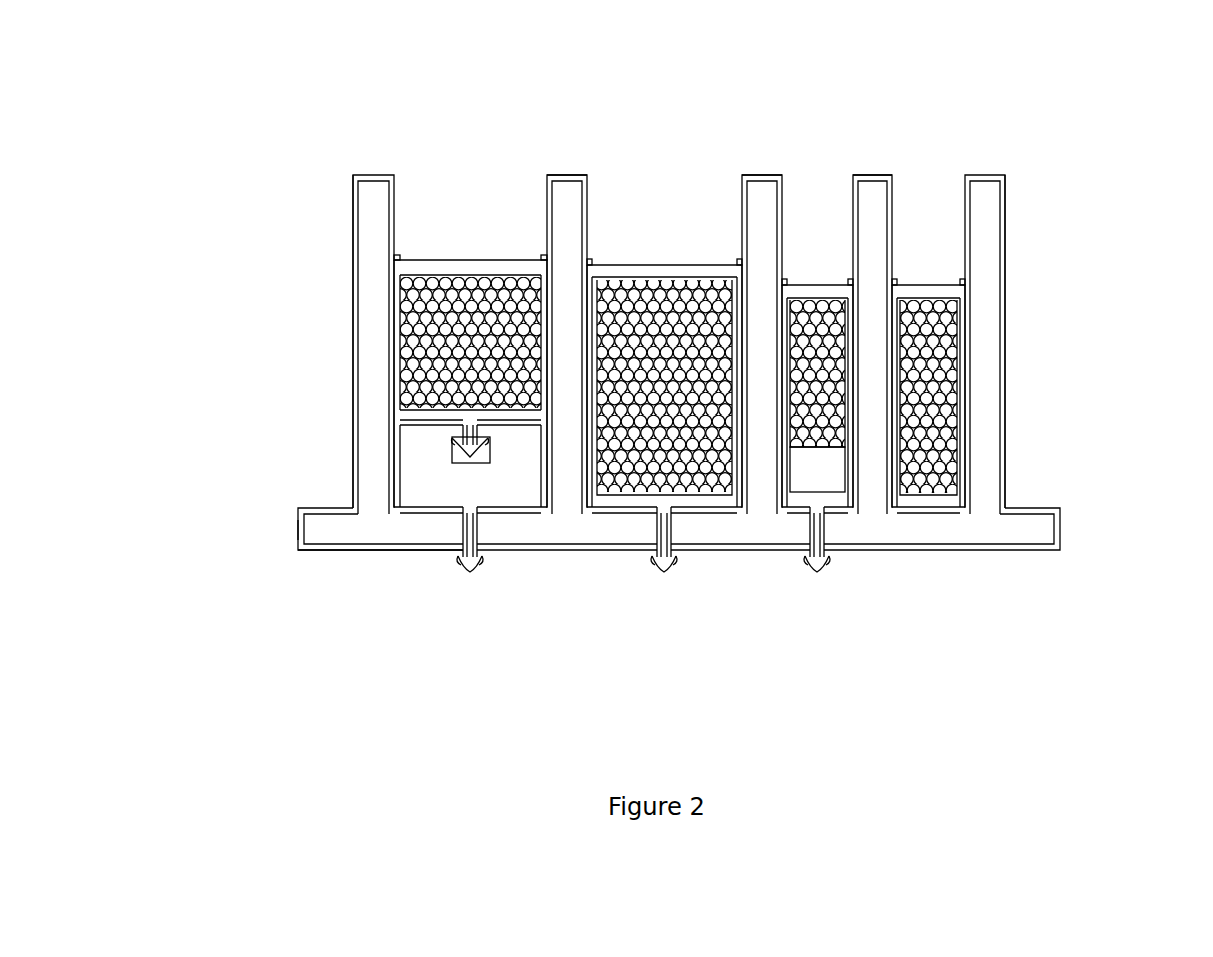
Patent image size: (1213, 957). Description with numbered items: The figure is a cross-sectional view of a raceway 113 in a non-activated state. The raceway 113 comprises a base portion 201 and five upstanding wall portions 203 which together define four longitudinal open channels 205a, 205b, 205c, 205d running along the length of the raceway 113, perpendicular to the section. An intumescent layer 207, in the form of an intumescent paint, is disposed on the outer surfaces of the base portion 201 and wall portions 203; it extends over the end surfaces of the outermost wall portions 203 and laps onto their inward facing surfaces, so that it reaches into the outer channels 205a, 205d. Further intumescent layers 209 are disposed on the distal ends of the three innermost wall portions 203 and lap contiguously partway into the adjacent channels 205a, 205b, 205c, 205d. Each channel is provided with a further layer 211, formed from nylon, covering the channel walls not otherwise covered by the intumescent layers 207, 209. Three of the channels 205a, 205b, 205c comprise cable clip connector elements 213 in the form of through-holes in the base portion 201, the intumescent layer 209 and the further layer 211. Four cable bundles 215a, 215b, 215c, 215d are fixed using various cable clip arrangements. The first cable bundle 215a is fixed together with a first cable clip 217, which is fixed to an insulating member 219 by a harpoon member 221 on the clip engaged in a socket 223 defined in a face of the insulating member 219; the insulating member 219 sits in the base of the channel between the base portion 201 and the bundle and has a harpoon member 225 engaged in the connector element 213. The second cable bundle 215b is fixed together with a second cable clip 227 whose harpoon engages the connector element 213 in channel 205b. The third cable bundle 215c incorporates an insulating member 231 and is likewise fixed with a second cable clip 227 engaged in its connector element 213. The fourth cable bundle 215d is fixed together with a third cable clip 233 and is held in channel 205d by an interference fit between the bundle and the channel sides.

The raceway 113 is at (315, 530).
The base portion 201 is at (525, 530).
The wall portions 203 is at (372, 210).
The channel 205a is at (372, 356).
The channel 205b is at (664, 349).
The channel 205c is at (856, 350).
The channel 205d is at (1026, 364).
The intumescent layer 207 is at (355, 322).
The further intumescent layers 209 is at (568, 178).
The further layer 211 is at (547, 255).
The cable clip connector elements 213 is at (457, 530).
The first cable bundle 215a is at (442, 347).
The second cable bundle 215b is at (690, 445).
The third cable bundle 215c is at (842, 413).
The fourth cable bundle 215d is at (935, 378).
The first cable clip 217 is at (410, 415).
The insulating member 219 is at (427, 492).
The harpoon member 221 is at (455, 450).
The socket 223 is at (453, 462).
The harpoon member 225 is at (468, 573).
The second cable clip 227 is at (602, 503).
The insulating member 231 is at (833, 473).
The third cable clip 233 is at (943, 500).